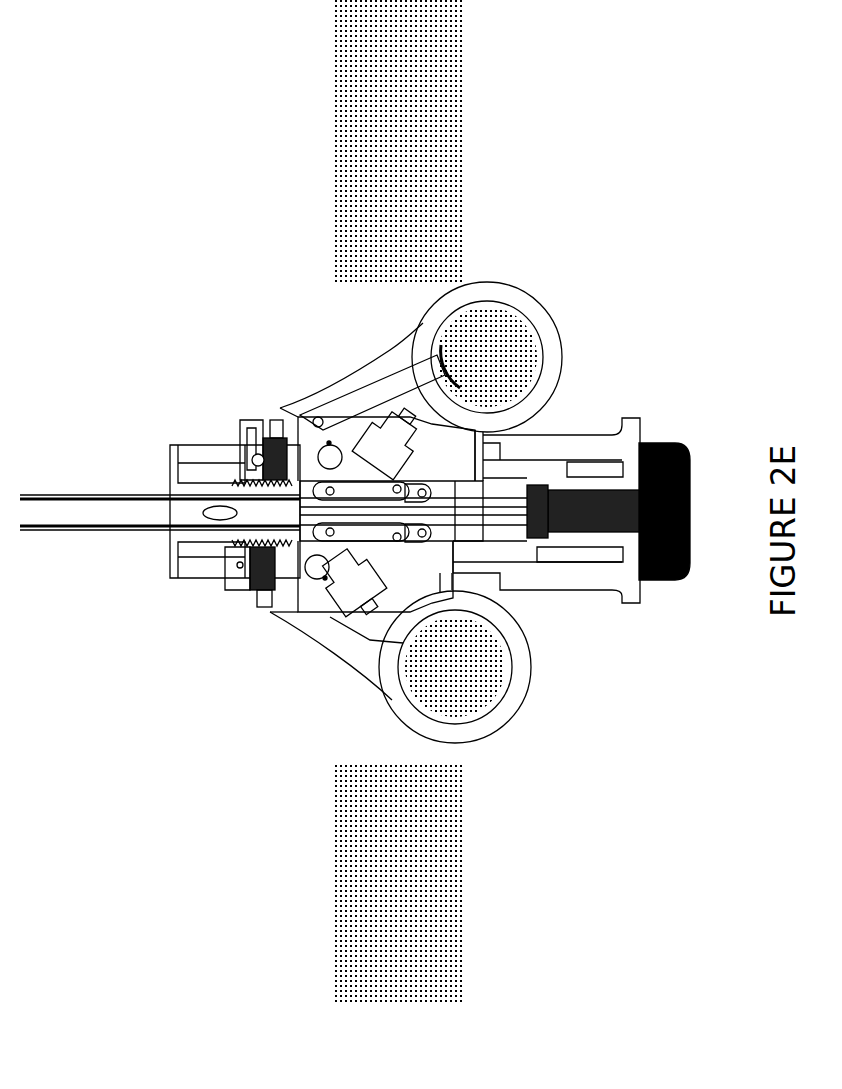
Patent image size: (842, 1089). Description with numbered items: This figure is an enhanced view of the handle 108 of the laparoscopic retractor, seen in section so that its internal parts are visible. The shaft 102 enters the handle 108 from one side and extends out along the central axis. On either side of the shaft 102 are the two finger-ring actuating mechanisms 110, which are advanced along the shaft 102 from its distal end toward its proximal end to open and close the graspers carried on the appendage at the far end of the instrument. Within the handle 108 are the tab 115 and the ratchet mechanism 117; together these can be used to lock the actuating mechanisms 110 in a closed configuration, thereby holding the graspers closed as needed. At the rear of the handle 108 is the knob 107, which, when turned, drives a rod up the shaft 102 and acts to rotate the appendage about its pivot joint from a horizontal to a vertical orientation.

The shaft 102 is at (70, 540).
The knob 107 is at (665, 590).
The handle 108 is at (623, 282).
The actuating mechanisms 110 is at (463, 270).
The tab 115 is at (375, 380).
The ratchet mechanism 117 is at (267, 440).